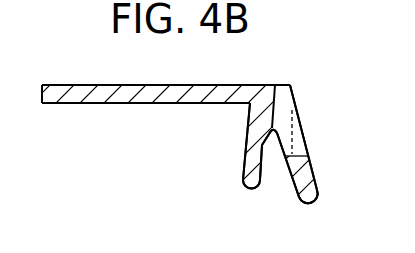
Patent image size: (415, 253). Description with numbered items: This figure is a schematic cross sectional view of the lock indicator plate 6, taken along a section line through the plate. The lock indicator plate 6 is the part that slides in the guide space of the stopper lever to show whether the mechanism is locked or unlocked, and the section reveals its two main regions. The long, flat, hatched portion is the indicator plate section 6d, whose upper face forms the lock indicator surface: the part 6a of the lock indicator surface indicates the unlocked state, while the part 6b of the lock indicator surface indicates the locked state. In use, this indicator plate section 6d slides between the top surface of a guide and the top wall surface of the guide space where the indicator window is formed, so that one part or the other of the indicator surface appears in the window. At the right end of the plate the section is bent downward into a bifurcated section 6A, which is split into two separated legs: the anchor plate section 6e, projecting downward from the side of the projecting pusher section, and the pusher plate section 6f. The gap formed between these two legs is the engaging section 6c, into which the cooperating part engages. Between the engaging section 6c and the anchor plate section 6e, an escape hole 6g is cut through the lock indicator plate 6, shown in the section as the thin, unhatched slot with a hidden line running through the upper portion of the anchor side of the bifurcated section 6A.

The lock indicator plate 6 is at (97, 108).
The part of the lock indicator surface for indicating the unlocked state 6a is at (107, 85).
The part of the lock indicator surface for indicating the locked state 6b is at (213, 85).
The engaging section 6c is at (272, 160).
The indicator plate section 6d is at (141, 104).
The anchor plate section 6e is at (321, 192).
The pusher plate section 6f is at (243, 177).
The escape hole 6g is at (293, 125).
The bifurcated section 6A is at (312, 166).